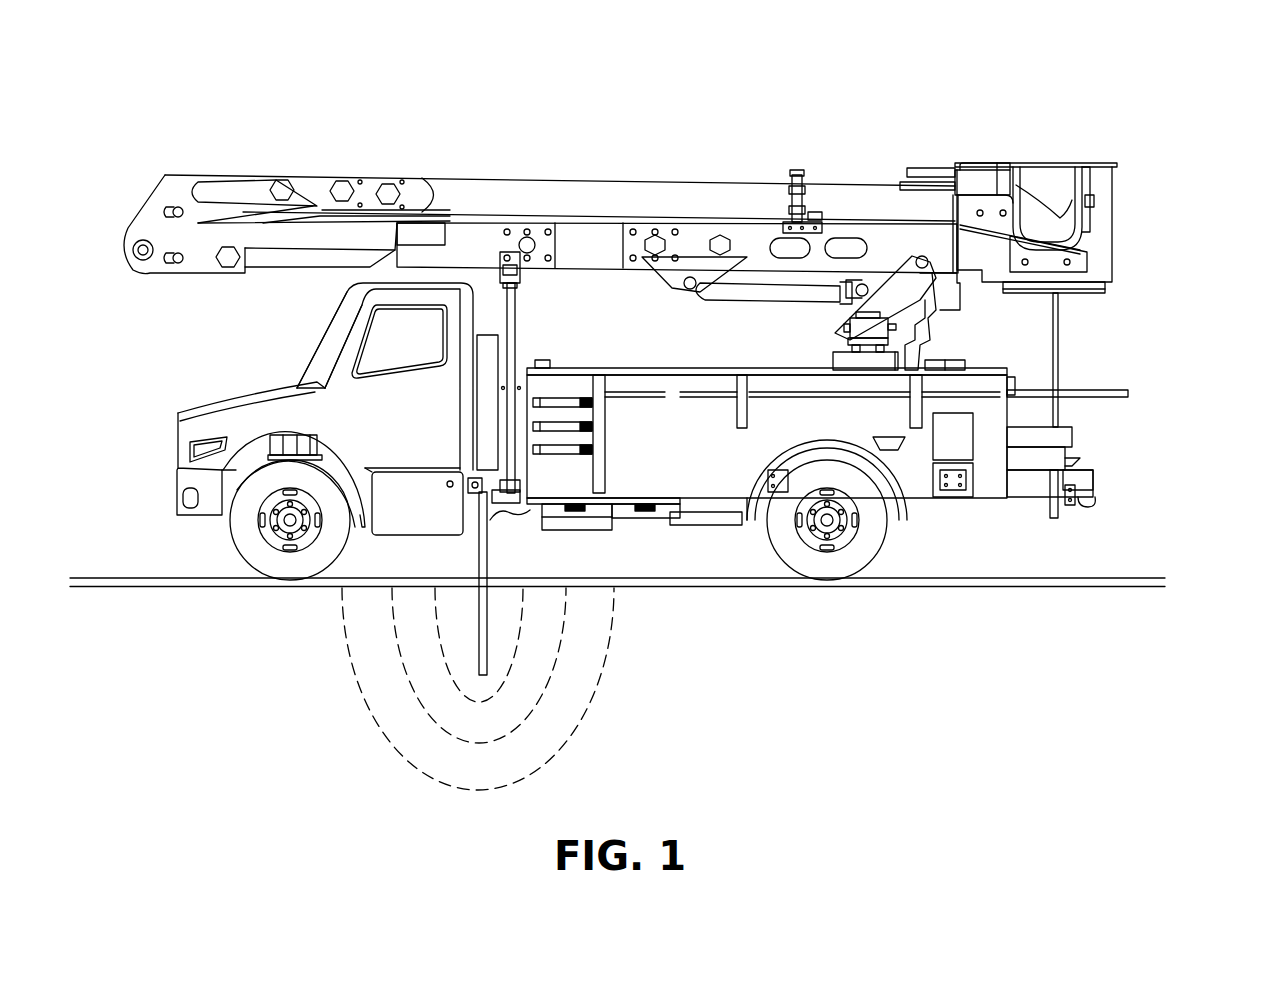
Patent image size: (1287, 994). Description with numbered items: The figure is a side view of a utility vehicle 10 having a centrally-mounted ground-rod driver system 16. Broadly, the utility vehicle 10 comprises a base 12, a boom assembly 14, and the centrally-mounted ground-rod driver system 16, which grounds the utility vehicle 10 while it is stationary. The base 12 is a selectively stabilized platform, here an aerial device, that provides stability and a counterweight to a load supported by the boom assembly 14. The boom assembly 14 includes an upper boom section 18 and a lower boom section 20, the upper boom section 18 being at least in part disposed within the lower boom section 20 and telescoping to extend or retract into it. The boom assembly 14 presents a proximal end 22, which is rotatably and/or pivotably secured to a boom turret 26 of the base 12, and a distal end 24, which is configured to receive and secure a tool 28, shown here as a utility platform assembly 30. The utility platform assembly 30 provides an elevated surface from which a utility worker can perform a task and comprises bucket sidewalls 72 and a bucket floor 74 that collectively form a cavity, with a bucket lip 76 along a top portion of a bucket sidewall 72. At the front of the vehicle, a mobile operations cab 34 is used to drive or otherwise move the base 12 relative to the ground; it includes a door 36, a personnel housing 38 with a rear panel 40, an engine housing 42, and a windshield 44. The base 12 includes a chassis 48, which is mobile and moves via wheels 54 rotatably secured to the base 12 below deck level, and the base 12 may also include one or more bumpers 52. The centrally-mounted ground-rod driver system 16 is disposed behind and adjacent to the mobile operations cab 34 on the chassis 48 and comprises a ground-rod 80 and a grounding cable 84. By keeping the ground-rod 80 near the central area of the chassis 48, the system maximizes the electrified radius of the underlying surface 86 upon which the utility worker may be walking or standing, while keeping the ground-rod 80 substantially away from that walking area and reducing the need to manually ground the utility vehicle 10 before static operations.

The utility vehicle 10 is at (111, 156).
The base 12 is at (1165, 351).
The boom assembly 14 is at (678, 151).
The centrally-mounted ground-rod driver system 16 is at (570, 548).
The upper boom section 18 is at (585, 267).
The lower boom section 20 is at (510, 186).
The proximal end 22 is at (810, 311).
The distal end 24 is at (850, 162).
The boom turret 26 is at (918, 290).
The tool 28 is at (1187, 112).
The utility platform assembly 30 is at (1132, 154).
The mobile operations cab 34 is at (151, 335).
The door 36 is at (393, 390).
The personnel housing 38 is at (425, 294).
The rear panel 40 is at (500, 317).
The engine housing 42 is at (213, 394).
The windshield 44 is at (300, 364).
The chassis 48 is at (772, 492).
The bumper 52 is at (1100, 489).
The wheels 54 is at (235, 545).
The bucket sidewalls 72 is at (1104, 211).
The bucket floor 74 is at (1107, 289).
The bucket lip 76 is at (1080, 163).
The ground-rod 80 is at (477, 569).
The grounding cable 84 is at (508, 530).
The underlying surface 86 is at (1082, 599).